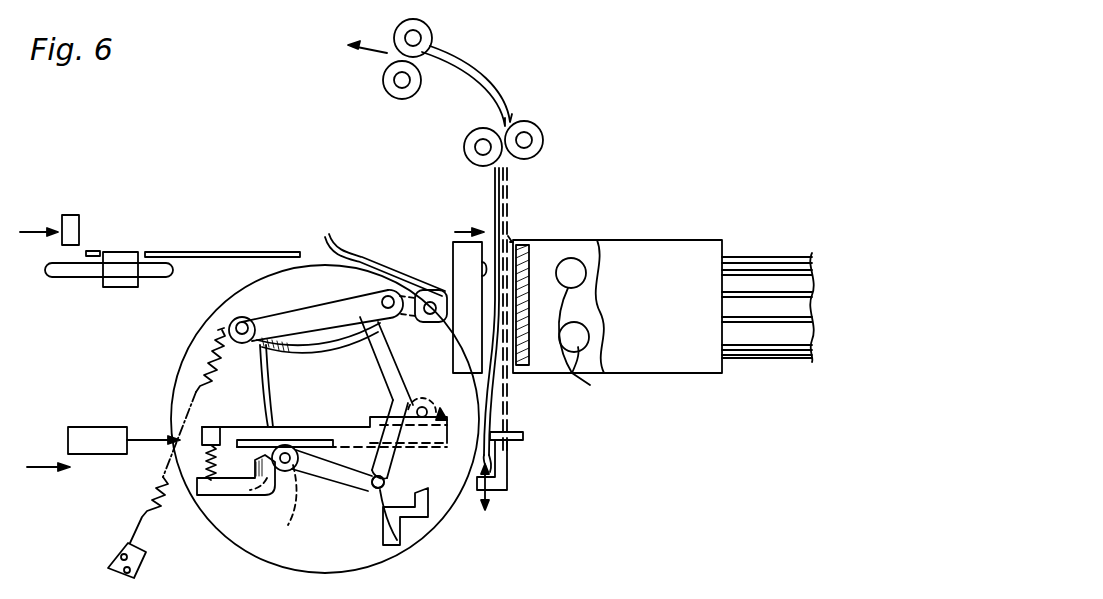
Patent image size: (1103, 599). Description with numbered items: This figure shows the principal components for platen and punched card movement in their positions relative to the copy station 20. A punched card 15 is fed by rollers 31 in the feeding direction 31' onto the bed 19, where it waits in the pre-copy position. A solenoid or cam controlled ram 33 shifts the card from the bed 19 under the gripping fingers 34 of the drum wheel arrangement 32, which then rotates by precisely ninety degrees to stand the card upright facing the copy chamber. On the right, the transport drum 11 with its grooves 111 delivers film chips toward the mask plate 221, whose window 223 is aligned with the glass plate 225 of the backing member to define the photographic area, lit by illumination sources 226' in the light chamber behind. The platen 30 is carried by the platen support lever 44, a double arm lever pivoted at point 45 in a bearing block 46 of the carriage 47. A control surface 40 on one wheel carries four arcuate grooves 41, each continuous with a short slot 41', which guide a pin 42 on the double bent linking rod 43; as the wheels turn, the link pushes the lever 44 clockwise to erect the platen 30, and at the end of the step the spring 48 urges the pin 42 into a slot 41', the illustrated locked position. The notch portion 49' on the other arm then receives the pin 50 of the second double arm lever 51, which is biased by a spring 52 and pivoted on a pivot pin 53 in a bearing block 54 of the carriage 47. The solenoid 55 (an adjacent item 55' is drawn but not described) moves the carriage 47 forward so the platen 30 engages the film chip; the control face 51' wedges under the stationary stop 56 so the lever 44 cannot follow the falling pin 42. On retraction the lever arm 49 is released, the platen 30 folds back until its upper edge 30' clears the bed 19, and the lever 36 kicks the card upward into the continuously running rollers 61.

The transport drum 11 is at (793, 257).
The grooves of the drum 111 is at (790, 322).
The punched card 15 is at (494, 196).
The bed 19 is at (180, 252).
The copy station 20 is at (668, 365).
The mask plate 221 is at (508, 240).
The window 223 is at (529, 268).
The glass plate 225 is at (522, 247).
The illumination sources 226' is at (587, 345).
The platen 30 is at (446, 299).
The upper edge of the platen 30' is at (455, 269).
The feed rollers 31 is at (109, 286).
The feeding direction 31' is at (447, 215).
The drum wheel arrangement 32 is at (197, 330).
The ram 33 is at (72, 218).
The gripping fingers 34 is at (345, 243).
The lever 36 is at (525, 436).
The control surface 40 is at (192, 340).
The arcuate grooves 41 is at (318, 352).
The slot 41' is at (250, 386).
The pin 42 is at (250, 318).
The linking rod 43 is at (340, 300).
The platen support lever 44 is at (400, 355).
The pivot point 45 is at (418, 412).
The bearing block 46 is at (443, 424).
The carriage 47 is at (294, 432).
The spring 48 is at (138, 506).
The lever arm 49 is at (406, 444).
The notch portion 49' is at (365, 523).
The pin 50 is at (375, 492).
The second double arm lever 51 is at (332, 484).
The control face 51' is at (421, 537).
The spring 52 is at (193, 482).
The pivot pin 53 is at (285, 472).
The bearing block 54 is at (288, 526).
The solenoid 55 is at (124, 427).
The input signal 55' is at (48, 480).
The stationary stop 56 is at (418, 520).
The rollers 61 is at (432, 37).